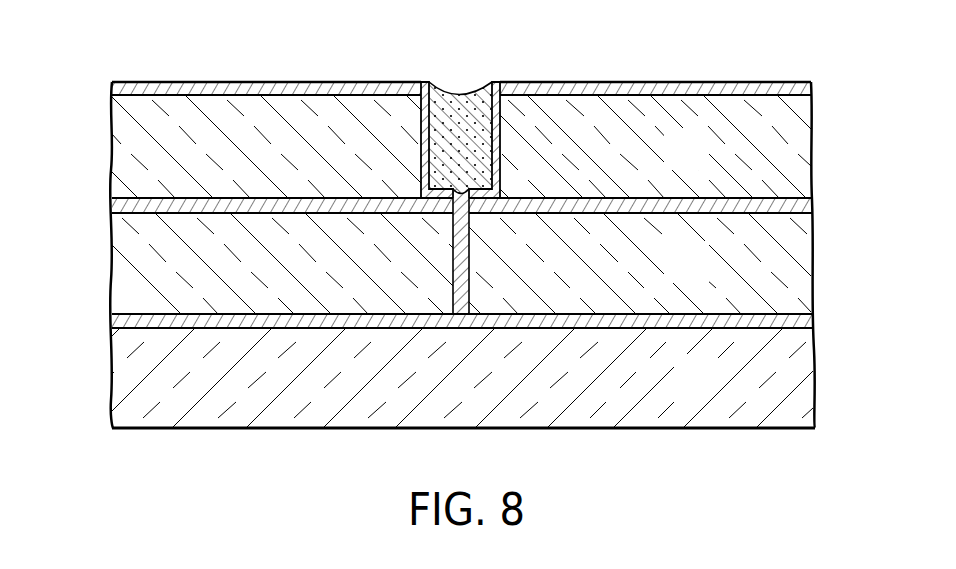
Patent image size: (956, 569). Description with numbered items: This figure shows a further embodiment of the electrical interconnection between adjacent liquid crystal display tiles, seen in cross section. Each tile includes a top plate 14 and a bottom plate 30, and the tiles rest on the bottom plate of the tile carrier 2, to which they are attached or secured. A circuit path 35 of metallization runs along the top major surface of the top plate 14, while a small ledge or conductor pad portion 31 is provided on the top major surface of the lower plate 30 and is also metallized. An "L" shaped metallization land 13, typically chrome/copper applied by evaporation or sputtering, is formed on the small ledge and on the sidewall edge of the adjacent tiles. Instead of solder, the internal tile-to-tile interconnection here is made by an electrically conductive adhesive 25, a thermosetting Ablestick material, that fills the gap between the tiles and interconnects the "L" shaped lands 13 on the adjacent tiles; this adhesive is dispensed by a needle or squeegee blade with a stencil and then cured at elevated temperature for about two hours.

The bottom plate of the tile carrier 2 is at (698, 389).
The "L" shaped metallization land 13 is at (500, 153).
The top plate 14 is at (702, 163).
The electrically conductive adhesive 25 is at (455, 97).
The bottom plate 30 is at (702, 277).
The ledge or conductor pad portion 31 is at (433, 213).
The circuit path 35 is at (155, 82).